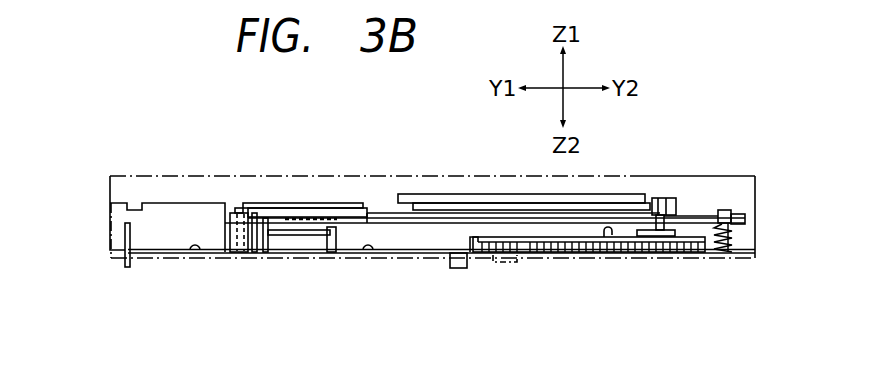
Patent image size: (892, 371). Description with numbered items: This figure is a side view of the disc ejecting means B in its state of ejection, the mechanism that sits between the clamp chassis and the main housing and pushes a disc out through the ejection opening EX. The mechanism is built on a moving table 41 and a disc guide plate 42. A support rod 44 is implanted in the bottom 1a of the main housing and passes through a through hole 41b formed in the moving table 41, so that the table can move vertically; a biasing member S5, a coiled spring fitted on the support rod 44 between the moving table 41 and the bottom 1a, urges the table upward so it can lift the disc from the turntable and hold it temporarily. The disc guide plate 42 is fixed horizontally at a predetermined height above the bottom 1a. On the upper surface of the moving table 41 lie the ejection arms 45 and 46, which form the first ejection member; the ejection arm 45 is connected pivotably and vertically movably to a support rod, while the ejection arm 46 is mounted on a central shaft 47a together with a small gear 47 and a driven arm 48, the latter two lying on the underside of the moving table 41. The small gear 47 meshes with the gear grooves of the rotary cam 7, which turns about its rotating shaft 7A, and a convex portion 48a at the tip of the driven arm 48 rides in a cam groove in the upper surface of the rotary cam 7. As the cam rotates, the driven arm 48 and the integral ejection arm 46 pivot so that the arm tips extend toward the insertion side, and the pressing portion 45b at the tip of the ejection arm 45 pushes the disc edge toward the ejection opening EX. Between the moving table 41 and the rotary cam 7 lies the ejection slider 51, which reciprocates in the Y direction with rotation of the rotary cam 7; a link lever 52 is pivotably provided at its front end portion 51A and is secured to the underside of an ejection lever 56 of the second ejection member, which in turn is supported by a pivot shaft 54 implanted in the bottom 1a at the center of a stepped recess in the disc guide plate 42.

The bottom of the main housing 1a is at (190, 252).
The ejection opening EX is at (102, 213).
The pivot shaft 54 is at (241, 206).
The disc guide plate 42 is at (275, 203).
The ejection lever 56 is at (319, 205).
The link lever 52 is at (297, 236).
The pressing portion 45b is at (393, 196).
The disc ejecting means B is at (432, 176).
The ejection arm 45 is at (459, 194).
The ejection arm 46 is at (510, 194).
The front end portion of the ejection slider 51A is at (373, 254).
The ejection slider 51 is at (487, 247).
The moving table 41 is at (539, 246).
The rotary cam 7 is at (566, 250).
The rotating shaft 7A is at (608, 238).
The small gear 47 is at (680, 253).
The convex portion 48a is at (634, 256).
The driven arm 48 is at (637, 194).
The central shaft 47a is at (665, 197).
The support rod 44 is at (726, 210).
The through hole 41b is at (749, 216).
The biasing member S5 is at (733, 243).